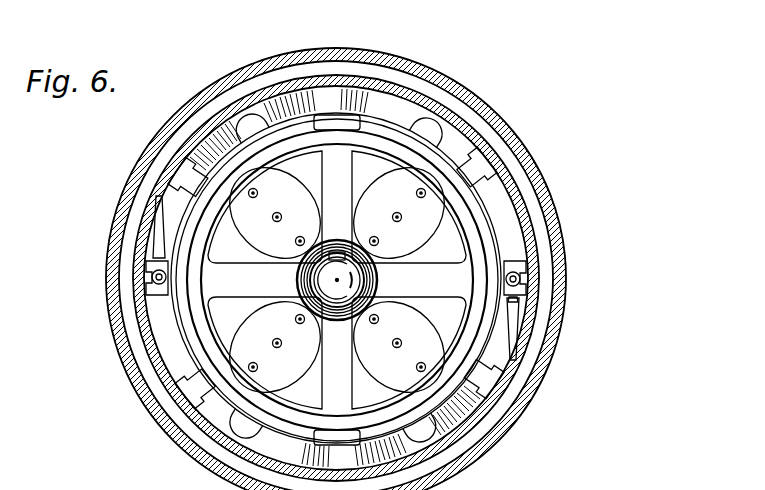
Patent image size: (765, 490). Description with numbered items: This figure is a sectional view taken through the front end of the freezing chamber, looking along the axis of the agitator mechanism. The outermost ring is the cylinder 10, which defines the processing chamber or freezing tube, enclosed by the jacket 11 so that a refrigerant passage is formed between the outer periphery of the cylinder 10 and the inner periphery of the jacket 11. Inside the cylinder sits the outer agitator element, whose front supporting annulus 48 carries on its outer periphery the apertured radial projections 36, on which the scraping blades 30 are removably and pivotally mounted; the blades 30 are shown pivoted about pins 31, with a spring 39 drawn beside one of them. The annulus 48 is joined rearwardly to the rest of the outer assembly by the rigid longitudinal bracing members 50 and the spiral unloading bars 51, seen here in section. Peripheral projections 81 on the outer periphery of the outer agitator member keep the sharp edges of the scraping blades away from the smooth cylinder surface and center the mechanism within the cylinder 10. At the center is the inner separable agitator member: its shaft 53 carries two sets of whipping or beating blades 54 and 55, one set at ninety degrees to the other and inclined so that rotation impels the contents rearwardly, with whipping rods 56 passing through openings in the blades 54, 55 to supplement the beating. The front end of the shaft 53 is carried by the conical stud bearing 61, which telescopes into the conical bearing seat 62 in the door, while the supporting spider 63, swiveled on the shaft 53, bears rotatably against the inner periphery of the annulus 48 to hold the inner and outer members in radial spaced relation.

The cylinder 10 is at (437, 74).
The jacket 11 is at (478, 142).
The scraping blades 30 is at (518, 326).
The pivot pin 31 is at (522, 279).
The apertured radial projections 36 is at (528, 258).
The spring 39 is at (520, 299).
The front supporting annulus 48 is at (293, 123).
The longitudinal bracing members 50 is at (341, 117).
The spiral unloading bars 51 is at (497, 412).
The shaft 53 is at (358, 279).
The whipping or beating blades 54 is at (248, 232).
The whipping or beating blades 55 is at (372, 189).
The whipping rods 56 is at (300, 236).
The conical stud bearing 61 is at (333, 320).
The conical bearing seat 62 is at (310, 279).
The supporting spider 63 is at (323, 390).
The peripheral projections 81 is at (478, 135).